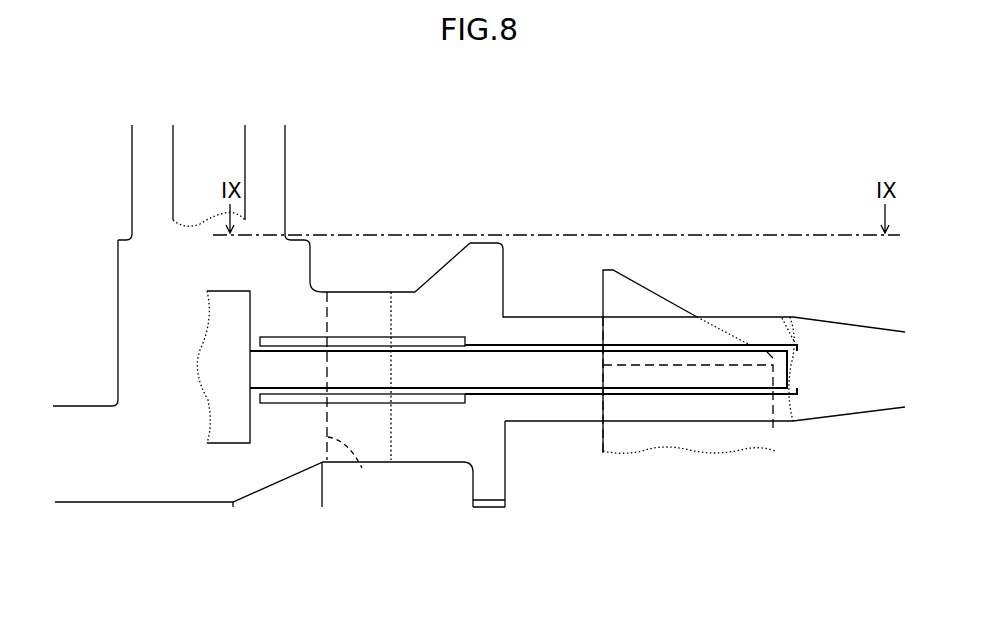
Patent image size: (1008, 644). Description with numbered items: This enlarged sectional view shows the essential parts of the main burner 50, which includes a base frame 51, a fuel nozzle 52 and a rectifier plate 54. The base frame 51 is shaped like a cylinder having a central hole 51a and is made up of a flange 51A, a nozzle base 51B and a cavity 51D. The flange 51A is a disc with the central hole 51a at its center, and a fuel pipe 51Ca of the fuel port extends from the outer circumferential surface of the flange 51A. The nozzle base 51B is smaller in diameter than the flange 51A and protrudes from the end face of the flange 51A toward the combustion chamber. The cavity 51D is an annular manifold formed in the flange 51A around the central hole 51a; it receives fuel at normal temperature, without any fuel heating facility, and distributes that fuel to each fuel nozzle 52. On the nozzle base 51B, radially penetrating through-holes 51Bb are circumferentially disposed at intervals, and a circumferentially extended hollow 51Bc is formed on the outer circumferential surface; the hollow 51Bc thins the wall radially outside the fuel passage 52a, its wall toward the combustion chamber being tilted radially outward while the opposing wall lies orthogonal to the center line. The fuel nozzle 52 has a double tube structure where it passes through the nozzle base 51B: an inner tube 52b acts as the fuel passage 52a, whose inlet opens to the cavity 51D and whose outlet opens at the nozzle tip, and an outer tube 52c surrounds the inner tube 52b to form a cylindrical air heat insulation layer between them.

The main burner 50 is at (552, 163).
The base frame 51 is at (100, 295).
The flange 51A is at (111, 353).
The nozzle base 51B is at (514, 280).
The through-hole 51Bb is at (361, 470).
The hollow 51Bc is at (448, 263).
The fuel pipe 51Ca is at (132, 158).
The cavity 51D is at (250, 414).
The central hole 51a is at (170, 503).
The fuel nozzle 52 is at (780, 310).
The fuel passage 52a is at (639, 350).
The inner tube 52b is at (565, 396).
The outer tube 52c is at (440, 404).
The rectifier plate 54 is at (653, 292).